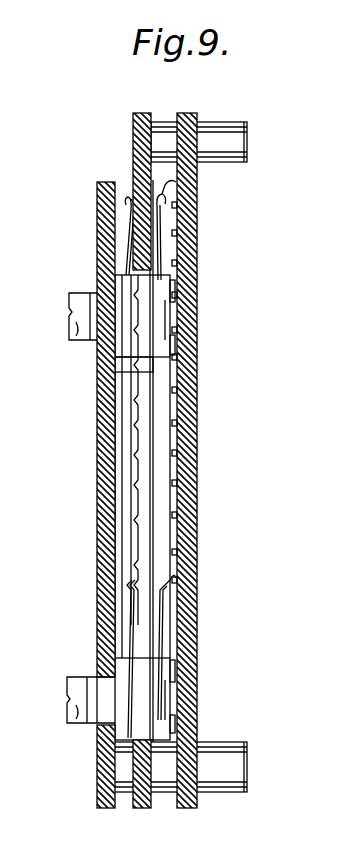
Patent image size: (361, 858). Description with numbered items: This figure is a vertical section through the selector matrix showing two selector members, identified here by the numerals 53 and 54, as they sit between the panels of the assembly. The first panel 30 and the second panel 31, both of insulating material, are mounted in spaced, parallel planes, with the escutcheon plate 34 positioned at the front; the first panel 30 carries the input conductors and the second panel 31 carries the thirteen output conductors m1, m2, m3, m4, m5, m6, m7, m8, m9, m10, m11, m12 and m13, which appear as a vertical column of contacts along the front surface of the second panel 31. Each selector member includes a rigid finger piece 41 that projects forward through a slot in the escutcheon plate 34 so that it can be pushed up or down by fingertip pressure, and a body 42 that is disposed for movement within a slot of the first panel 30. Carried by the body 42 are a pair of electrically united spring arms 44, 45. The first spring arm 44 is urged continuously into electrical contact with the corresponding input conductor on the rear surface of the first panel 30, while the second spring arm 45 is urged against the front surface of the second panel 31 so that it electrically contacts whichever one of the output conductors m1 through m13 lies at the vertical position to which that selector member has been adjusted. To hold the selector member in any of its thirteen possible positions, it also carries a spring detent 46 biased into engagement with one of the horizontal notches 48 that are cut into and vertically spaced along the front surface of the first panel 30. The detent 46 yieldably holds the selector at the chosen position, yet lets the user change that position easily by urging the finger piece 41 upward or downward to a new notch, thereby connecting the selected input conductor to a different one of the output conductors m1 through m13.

The first panel 30 is at (133, 165).
The second panel 31 is at (197, 118).
The escutcheon plate 34 is at (102, 238).
The finger piece 41 is at (80, 335).
The body 42 is at (160, 355).
The first spring arm 44 is at (172, 185).
The second spring arm 45 is at (160, 222).
The spring detent 46 is at (128, 210).
The horizontal notches 48 is at (133, 455).
The terminal block 53 is at (58, 324).
The terminal block 54 is at (76, 677).
The output conductor m1 is at (176, 580).
The output conductor m2 is at (176, 552).
The output conductor m3 is at (176, 515).
The output conductor m4 is at (176, 483).
The output conductor m5 is at (176, 453).
The output conductor m6 is at (176, 423).
The output conductor m7 is at (176, 390).
The output conductor m8 is at (176, 357).
The output conductor m9 is at (176, 330).
The output conductor m10 is at (176, 295).
The output conductor m11 is at (176, 263).
The output conductor m12 is at (176, 233).
The output conductor m13 is at (176, 205).